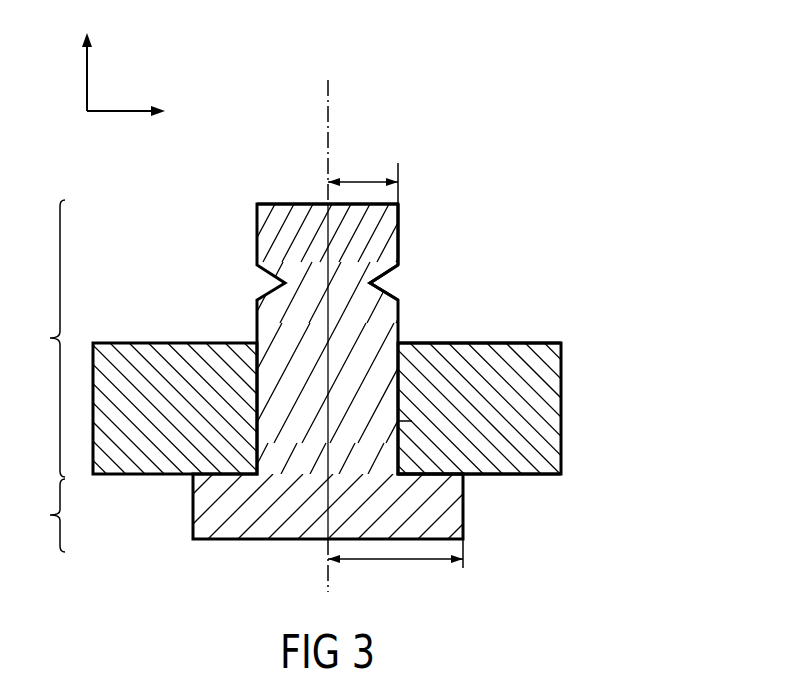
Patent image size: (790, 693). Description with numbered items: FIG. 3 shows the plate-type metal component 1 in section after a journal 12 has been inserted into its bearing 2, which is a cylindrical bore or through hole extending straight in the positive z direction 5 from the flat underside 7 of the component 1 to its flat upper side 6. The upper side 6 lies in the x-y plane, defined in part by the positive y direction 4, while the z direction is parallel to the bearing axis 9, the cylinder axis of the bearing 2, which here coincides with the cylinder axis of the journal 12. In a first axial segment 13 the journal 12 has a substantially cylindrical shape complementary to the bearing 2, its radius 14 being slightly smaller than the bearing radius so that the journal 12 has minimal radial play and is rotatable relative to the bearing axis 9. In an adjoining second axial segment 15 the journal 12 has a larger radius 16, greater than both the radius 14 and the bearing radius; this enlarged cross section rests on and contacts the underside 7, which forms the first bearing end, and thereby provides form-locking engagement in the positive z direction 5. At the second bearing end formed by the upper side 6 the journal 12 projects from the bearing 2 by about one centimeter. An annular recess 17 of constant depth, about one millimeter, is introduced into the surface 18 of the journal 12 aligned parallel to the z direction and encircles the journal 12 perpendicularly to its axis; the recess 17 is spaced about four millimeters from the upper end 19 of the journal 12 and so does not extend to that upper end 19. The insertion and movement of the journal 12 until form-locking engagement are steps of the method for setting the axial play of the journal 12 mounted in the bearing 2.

The component 1 is at (561, 405).
The bearing 2 is at (286, 362).
The positive y direction 4 is at (130, 111).
The positive z direction 5 is at (87, 70).
The upper side 6 is at (482, 343).
The underside 7 is at (555, 474).
The bearing axis 9 is at (328, 92).
The journal 12 is at (398, 235).
The first axial segment 13 is at (40, 338).
The radius 14 is at (375, 160).
The second axial segment 15 is at (40, 515).
The radius 16 is at (390, 562).
The recess 17 is at (412, 283).
The surface 18 is at (412, 421).
The upper end 19 is at (286, 204).